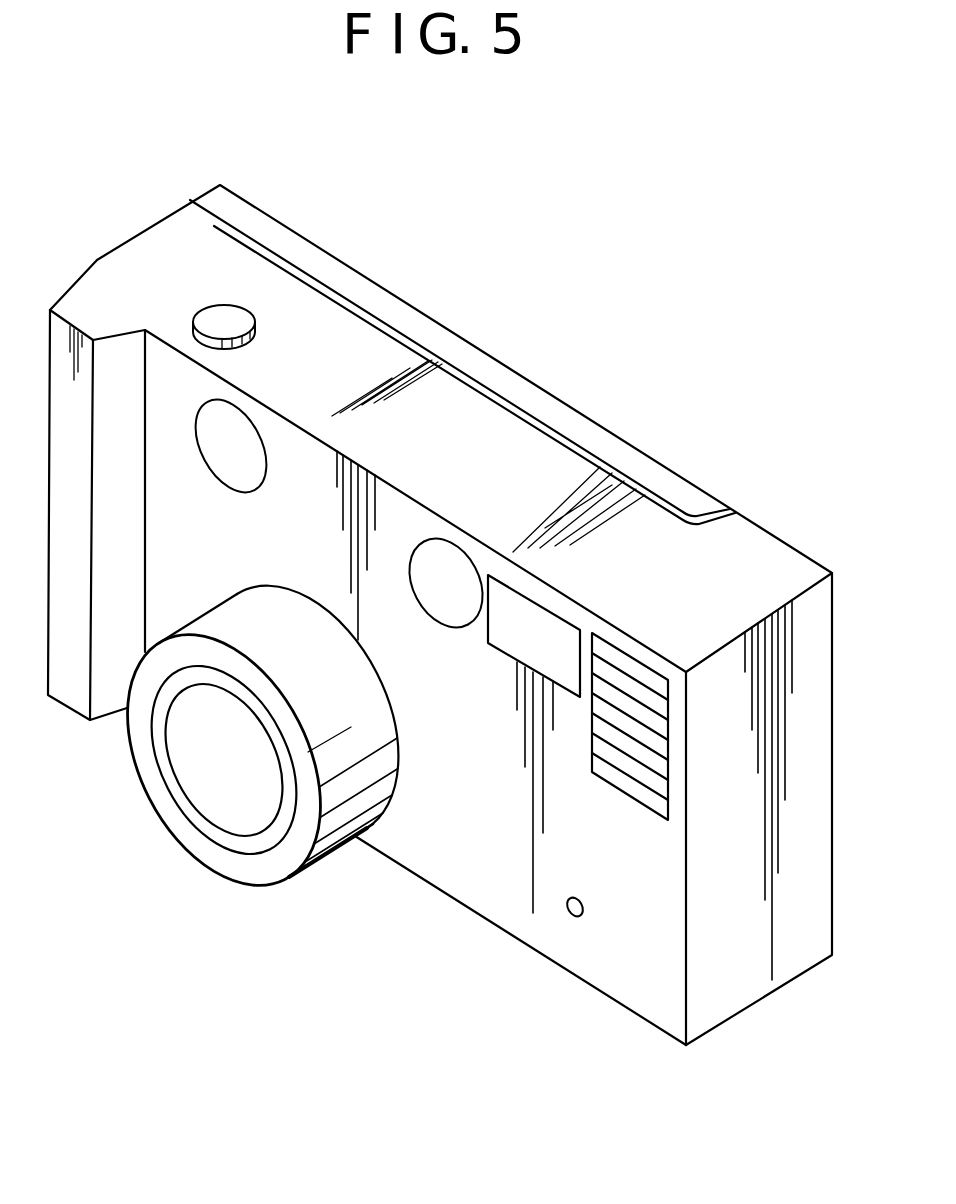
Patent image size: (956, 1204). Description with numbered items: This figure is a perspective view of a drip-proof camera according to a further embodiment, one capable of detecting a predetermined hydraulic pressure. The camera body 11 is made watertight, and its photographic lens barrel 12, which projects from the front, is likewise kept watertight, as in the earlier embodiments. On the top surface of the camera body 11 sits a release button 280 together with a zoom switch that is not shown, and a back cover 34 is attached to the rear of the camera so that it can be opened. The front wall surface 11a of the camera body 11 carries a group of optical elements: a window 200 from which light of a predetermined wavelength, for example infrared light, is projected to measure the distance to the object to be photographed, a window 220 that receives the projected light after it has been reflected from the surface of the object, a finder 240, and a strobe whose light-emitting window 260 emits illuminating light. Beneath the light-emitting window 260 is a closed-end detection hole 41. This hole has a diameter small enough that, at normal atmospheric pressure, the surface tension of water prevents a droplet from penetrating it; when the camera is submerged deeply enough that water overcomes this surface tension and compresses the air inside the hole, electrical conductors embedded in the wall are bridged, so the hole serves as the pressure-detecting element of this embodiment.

The camera body 11 is at (742, 543).
The wall surface 11a is at (467, 888).
The photographic lens barrel 12 is at (345, 846).
The back cover 34 is at (405, 320).
The closed-end detection hole 41 is at (573, 917).
The window 200 is at (215, 442).
The window 220 is at (458, 575).
The finder 240 is at (538, 623).
The light-emitting window 260 is at (630, 675).
The release button 280 is at (240, 316).